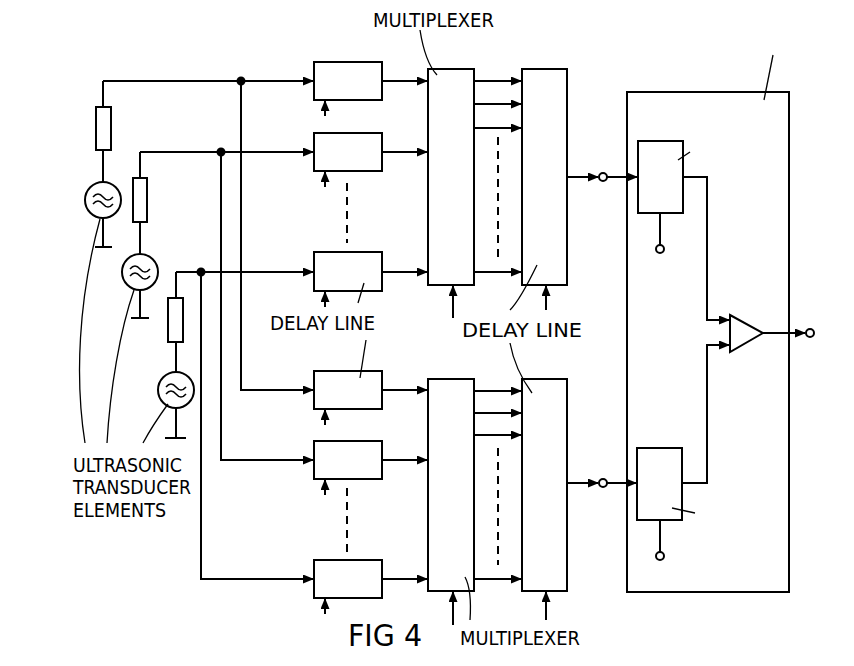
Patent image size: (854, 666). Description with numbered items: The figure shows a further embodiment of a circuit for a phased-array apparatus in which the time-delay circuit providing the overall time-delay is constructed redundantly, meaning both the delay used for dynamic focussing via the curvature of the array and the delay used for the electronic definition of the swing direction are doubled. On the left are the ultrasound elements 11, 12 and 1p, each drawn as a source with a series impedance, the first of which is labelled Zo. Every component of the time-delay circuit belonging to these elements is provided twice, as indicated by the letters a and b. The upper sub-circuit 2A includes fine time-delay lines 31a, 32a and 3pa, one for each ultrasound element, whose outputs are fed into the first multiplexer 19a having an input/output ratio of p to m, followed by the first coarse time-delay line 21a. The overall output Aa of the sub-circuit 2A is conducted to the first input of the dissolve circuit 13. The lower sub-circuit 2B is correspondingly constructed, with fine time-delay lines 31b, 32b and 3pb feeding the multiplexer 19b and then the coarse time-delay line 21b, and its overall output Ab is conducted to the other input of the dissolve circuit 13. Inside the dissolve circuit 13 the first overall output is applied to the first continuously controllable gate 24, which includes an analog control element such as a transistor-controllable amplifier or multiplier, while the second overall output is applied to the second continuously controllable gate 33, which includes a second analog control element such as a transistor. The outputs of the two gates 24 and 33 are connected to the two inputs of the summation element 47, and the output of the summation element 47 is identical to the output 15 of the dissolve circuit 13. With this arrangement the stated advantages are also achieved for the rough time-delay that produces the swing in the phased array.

The characteristic impedance Zo is at (112, 126).
The ultrasound element 11 is at (95, 185).
The ultrasound element 12 is at (133, 285).
The ultrasound element 1p is at (158, 393).
The time-delay line 31a is at (344, 62).
The time-delay line 32a is at (314, 143).
The time-delay line 3pa is at (314, 261).
The time-delay line 31b is at (314, 381).
The time-delay line 32b is at (314, 451).
The time-delay line 3pb is at (314, 569).
The sub-circuit 2A is at (392, 233).
The sub-circuit 2B is at (397, 535).
The first multiplexer 19a is at (449, 69).
The multiplexer 19b is at (451, 379).
The first coarse time-delay line 21a is at (541, 69).
The coarse time-delay line 21b is at (541, 379).
The overall output Aa is at (603, 173).
The overall output Ab is at (603, 479).
The dissolve circuit 13 is at (686, 92).
The first continuously controllable gate 24 is at (652, 141).
The second continuously controllable gate 33 is at (662, 448).
The summation element 47 is at (738, 320).
The output 15 is at (810, 328).